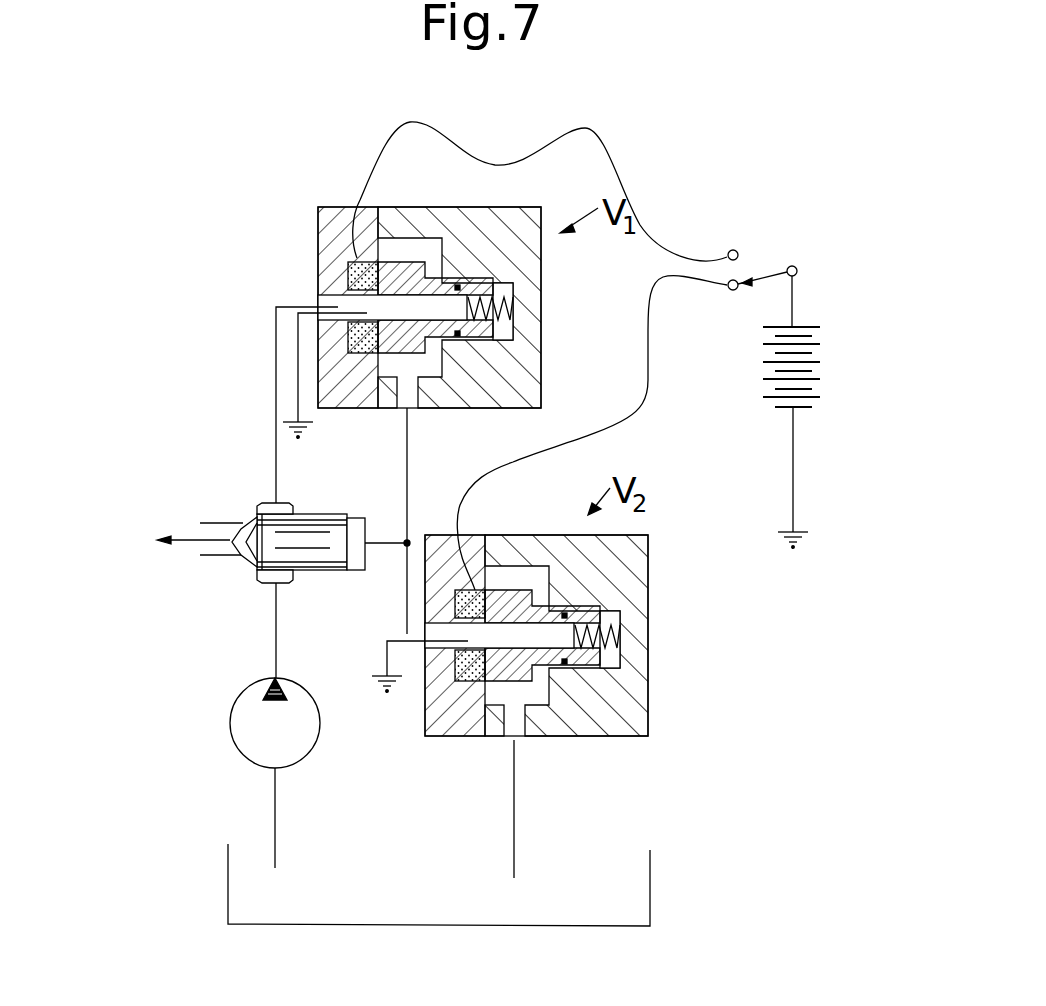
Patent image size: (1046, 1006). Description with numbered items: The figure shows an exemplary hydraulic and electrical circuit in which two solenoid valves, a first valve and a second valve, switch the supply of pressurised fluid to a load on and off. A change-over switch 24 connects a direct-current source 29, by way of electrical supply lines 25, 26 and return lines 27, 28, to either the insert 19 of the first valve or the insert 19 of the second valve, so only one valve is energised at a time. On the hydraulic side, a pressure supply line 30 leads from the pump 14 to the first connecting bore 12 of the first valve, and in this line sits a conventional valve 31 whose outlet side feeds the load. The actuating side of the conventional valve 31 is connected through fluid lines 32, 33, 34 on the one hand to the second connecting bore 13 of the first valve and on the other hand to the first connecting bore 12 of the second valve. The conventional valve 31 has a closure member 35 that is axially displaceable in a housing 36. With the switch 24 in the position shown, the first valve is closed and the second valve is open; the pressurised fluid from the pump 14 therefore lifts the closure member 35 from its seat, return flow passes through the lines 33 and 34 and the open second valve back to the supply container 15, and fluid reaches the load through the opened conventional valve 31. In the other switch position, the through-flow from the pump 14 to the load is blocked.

The first connecting bore 12 is at (318, 298).
The second connecting bore 13 is at (425, 410).
The pump 14 is at (229, 724).
The supply container 15 is at (226, 875).
The insert 19 is at (348, 264).
The change-over switch 24 is at (766, 250).
The electrical supply line 25 is at (605, 143).
The electrical supply line 26 is at (623, 418).
The return line 27 is at (298, 358).
The return line 28 is at (383, 663).
The direct-current source 29 is at (822, 371).
The pressure supply line 30 is at (272, 624).
The conventional valve 31 is at (327, 503).
The fluid line 32 is at (408, 474).
The fluid line 33 is at (386, 541).
The fluid line 34 is at (404, 568).
The closure member 35 is at (248, 572).
The housing 36 is at (282, 503).